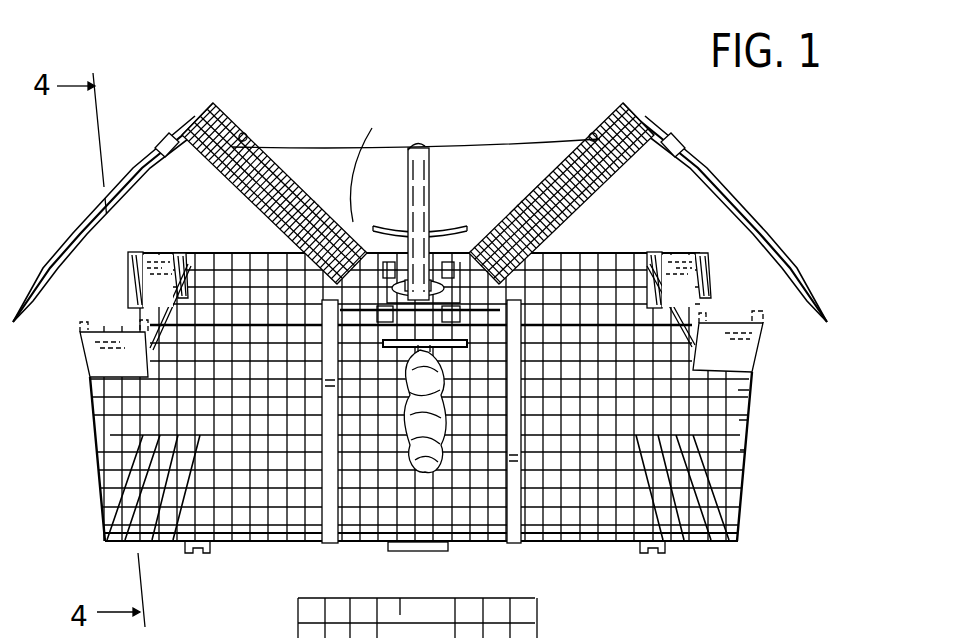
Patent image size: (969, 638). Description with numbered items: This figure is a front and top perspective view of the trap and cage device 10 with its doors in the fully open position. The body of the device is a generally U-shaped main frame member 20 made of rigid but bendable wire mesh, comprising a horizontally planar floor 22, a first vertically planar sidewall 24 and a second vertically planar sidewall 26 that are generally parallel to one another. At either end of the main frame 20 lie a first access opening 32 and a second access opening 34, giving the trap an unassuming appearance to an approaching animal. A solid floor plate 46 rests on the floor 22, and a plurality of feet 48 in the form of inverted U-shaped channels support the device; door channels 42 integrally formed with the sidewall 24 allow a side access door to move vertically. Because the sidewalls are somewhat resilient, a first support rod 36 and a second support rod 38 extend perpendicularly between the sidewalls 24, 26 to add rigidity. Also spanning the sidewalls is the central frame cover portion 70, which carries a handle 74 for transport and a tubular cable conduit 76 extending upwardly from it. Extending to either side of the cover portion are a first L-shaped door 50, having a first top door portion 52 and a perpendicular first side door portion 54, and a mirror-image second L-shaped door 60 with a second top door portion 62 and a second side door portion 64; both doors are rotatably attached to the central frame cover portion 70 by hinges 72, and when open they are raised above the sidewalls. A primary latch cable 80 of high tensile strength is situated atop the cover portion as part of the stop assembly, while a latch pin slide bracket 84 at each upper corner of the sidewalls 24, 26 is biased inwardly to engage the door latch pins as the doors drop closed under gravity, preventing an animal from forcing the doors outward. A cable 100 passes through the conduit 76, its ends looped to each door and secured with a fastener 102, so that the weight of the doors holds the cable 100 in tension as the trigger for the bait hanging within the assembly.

The trap and cage device 10 is at (522, 80).
The main frame member 20 is at (708, 528).
The floor 22 is at (160, 545).
The first sidewall 24 is at (735, 420).
The second sidewall 26 is at (588, 262).
The first access opening 32 is at (67, 320).
The second access opening 34 is at (773, 316).
The first support rod 36 is at (173, 273).
The second support rod 38 is at (670, 273).
The door channels 42 is at (330, 540).
The solid floor plate 46 is at (235, 518).
The feet 48 is at (650, 550).
The first L-shaped door 50 is at (232, 118).
The first top door portion 52 is at (285, 172).
The first side door portion 54 is at (72, 242).
The second L-shaped door 60 is at (626, 106).
The second top door portion 62 is at (597, 128).
The second side door portion 64 is at (762, 238).
The central frame cover portion 70 is at (437, 280).
The hinges 72 is at (453, 277).
The handle 74 is at (403, 280).
The tubular cable conduit 76 is at (418, 141).
The primary latch cable 80 is at (370, 161).
The latch pin slide bracket 84 is at (158, 277).
The cable 100 is at (468, 143).
The fastener 102 is at (250, 136).